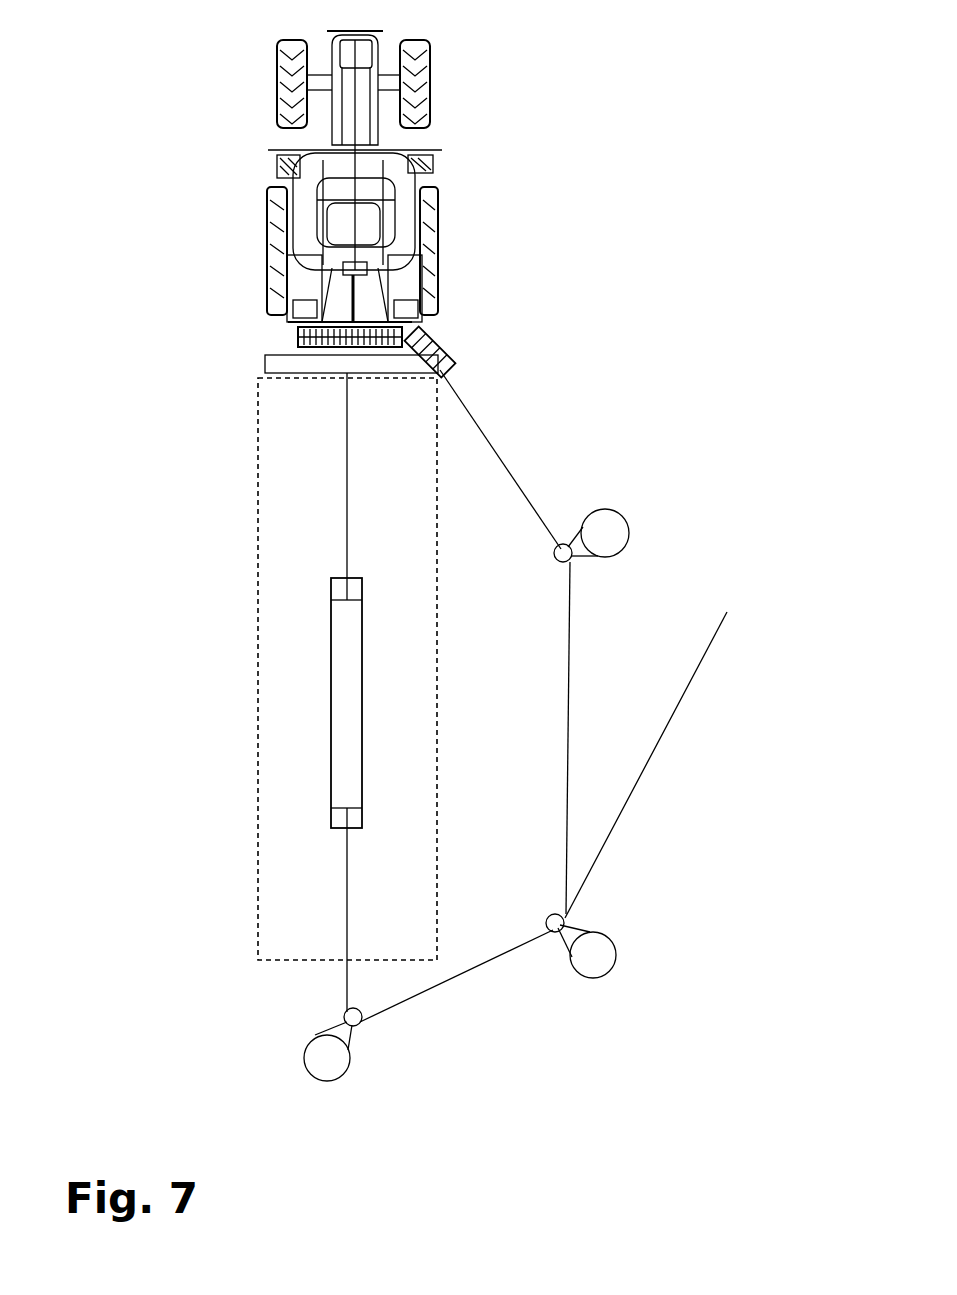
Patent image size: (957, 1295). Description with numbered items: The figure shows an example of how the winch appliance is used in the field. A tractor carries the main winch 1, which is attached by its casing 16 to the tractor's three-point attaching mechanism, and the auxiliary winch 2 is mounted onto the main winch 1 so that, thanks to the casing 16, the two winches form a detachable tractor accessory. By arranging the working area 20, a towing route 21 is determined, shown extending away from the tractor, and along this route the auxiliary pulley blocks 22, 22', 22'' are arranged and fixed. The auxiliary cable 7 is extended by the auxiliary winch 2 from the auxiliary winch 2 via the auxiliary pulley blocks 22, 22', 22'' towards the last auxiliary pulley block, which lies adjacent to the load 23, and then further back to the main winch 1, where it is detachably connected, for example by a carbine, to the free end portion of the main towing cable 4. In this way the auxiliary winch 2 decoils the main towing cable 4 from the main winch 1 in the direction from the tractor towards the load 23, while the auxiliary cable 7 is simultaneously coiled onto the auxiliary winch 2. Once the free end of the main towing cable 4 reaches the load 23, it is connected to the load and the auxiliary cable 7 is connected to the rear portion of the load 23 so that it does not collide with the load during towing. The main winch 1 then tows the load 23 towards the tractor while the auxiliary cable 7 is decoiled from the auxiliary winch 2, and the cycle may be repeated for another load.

The main winch 1 is at (293, 342).
The auxiliary winch 2 is at (455, 350).
The main towing cable 4 is at (344, 460).
The auxiliary cable 7 is at (482, 418).
The casing 16 is at (433, 323).
The working area 20 is at (505, 533).
The towing route 21 is at (315, 510).
The auxiliary pulley block 22 is at (557, 792).
The auxiliary pulley block 22' is at (616, 953).
The auxiliary pulley block 22'' is at (415, 1044).
The load 23 is at (340, 757).